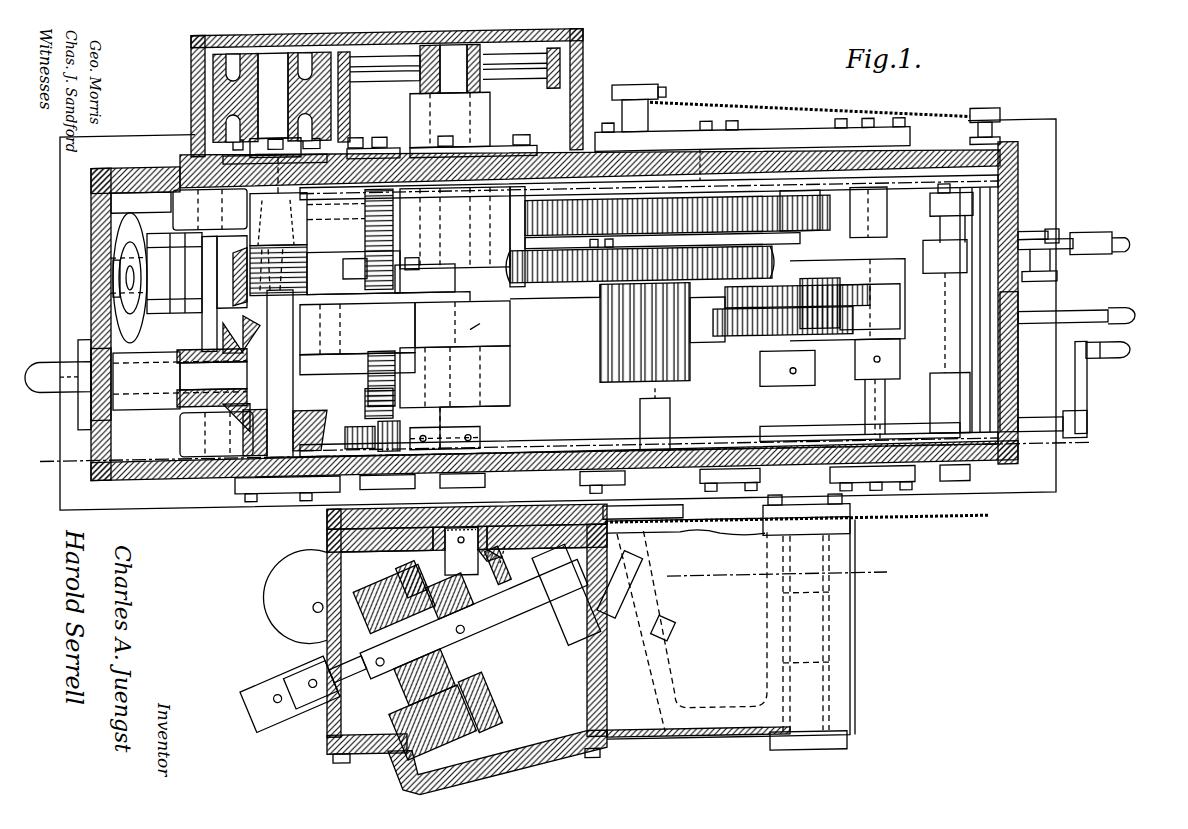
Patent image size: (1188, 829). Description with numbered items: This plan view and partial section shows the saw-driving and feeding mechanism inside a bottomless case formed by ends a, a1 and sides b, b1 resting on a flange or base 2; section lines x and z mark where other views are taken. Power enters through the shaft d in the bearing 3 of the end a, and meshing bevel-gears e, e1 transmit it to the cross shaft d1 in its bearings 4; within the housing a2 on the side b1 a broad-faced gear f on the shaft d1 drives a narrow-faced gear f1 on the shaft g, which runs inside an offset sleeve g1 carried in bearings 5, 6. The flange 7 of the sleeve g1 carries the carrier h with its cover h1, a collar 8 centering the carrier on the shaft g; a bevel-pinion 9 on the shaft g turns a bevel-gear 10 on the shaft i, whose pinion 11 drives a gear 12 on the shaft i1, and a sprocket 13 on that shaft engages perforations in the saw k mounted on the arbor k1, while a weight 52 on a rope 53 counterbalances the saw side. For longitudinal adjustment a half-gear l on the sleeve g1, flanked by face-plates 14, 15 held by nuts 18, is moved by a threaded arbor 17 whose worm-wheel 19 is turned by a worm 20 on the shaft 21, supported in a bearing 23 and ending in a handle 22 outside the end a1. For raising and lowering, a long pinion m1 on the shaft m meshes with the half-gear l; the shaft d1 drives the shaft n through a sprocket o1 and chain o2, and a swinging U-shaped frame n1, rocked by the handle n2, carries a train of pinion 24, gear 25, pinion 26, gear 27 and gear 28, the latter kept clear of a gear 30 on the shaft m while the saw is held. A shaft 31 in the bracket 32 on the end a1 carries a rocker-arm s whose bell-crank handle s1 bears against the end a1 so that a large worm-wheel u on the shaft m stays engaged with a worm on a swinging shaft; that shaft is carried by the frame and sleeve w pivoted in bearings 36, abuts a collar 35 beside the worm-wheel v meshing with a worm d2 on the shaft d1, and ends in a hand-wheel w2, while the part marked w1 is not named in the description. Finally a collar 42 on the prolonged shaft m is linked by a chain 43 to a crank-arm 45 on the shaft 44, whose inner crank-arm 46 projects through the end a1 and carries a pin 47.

The flange or base 2 is at (128, 134).
The section line x x is at (566, 448).
The end of case a is at (91, 254).
The end of case a1 is at (1018, 370).
The housing a2 is at (191, 70).
The hand-wheel w2 is at (100, 211).
The shaft d1 is at (272, 255).
The bearings 4 is at (278, 130).
The gear f is at (350, 100).
The gear f1 is at (396, 90).
The shaft g is at (485, 309).
The bearing 5 is at (470, 135).
The sleeve g1 is at (500, 366).
The collar 42 is at (626, 86).
The shaft m is at (675, 405).
The chain o2 is at (700, 180).
The side of case b1 is at (747, 165).
The gear 28 is at (805, 195).
The chain 43 is at (825, 112).
The crank-arm 45 is at (998, 116).
The shaft 44 is at (994, 136).
The side of case b is at (912, 195).
The frame and sleeve w is at (168, 300).
The shaft i is at (76, 274).
The bearings 36 is at (174, 200).
The bevel-gear e is at (205, 343).
The worm-wheel v is at (286, 322).
The bevel-gear e1 is at (320, 402).
The bearing 3 is at (150, 385).
The collar 35 is at (186, 440).
The shaft d is at (50, 355).
The threaded arbor 17 is at (364, 210).
The sprocket o1 is at (307, 219).
The nuts 18 is at (350, 254).
The shaft i1 is at (530, 658).
The face-plate 15 is at (446, 285).
The gear 30 is at (530, 236).
The worm shaft w1 is at (590, 242).
The worm-wheel u is at (640, 281).
The half-gear l is at (476, 323).
The collar 8 is at (514, 560).
The worm d2 is at (357, 329).
The face-plate 14 is at (370, 350).
The worm 20 is at (378, 428).
The worm-wheel 19 is at (348, 433).
The bearing 23 is at (440, 425).
The bearing 6 is at (522, 412).
The pinion m1 is at (692, 354).
The gear 25 is at (726, 300).
The gear 27 is at (774, 340).
The pinion 26 is at (752, 341).
The pinion 24 is at (849, 300).
The swinging U-shaped frame n1 is at (900, 352).
The shaft n is at (885, 410).
The shaft 31 is at (945, 393).
The shaft 21 is at (810, 430).
The bracket 32 is at (966, 212).
The rocker-arm s is at (962, 275).
The crank-arm 46 is at (1033, 240).
The bell-crank handle s1 is at (1122, 250).
The pin 47 is at (1052, 288).
The handle n2 is at (1114, 320).
The handle 22 is at (1087, 398).
The carrier h is at (578, 632).
The flange 7 is at (327, 526).
The cover h1 is at (470, 762).
The bevel-pinion 9 is at (500, 560).
The pinion 11 is at (422, 618).
The gear 12 is at (366, 700).
The bevel-gear 10 is at (462, 690).
The counterbalance or weight 52 is at (276, 597).
The rope 53 is at (314, 607).
The section line z z is at (240, 707).
The arbor k1 is at (825, 642).
The saw k is at (950, 522).
The sprocket 13 is at (658, 606).